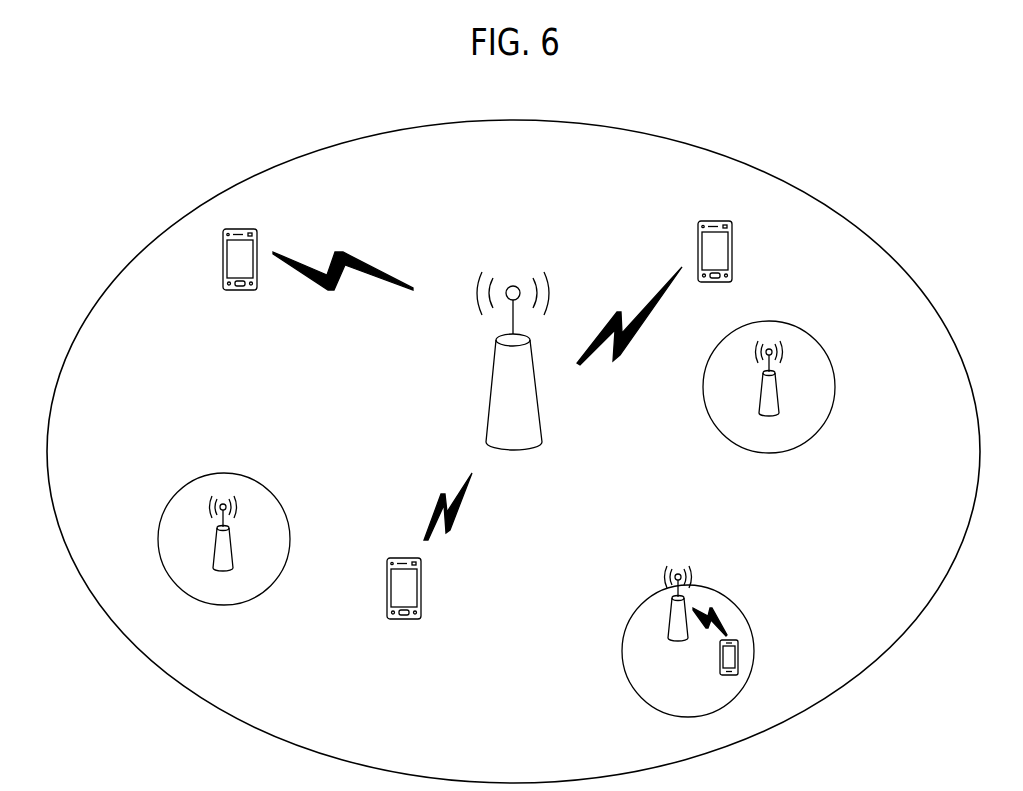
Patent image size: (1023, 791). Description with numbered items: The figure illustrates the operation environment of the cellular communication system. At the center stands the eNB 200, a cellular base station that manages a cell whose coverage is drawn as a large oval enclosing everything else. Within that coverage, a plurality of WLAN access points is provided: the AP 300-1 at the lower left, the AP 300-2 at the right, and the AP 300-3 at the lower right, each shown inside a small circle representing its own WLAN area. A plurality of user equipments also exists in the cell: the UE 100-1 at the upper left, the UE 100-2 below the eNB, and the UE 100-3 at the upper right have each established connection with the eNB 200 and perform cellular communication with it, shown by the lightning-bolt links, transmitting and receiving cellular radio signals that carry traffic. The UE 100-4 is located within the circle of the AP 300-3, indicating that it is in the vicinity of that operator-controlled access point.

The user equipment (UE) 100-1 is at (258, 243).
The user equipment (UE) 100-2 is at (421, 585).
The user equipment (UE) 100-3 is at (732, 258).
The user equipment (UE) 100-4 is at (738, 655).
The evolved Node-B (eNB) 200 is at (489, 380).
The WLAN access point (AP) 300-1 is at (233, 548).
The WLAN access point (AP) 300-2 is at (779, 392).
The WLAN access point (AP) 300-3 is at (666, 622).